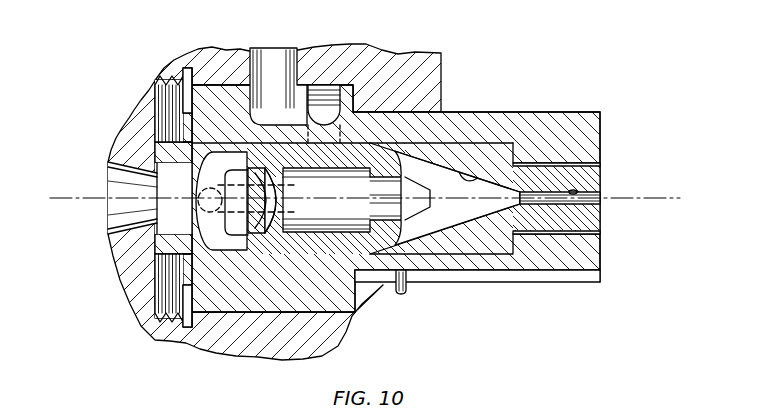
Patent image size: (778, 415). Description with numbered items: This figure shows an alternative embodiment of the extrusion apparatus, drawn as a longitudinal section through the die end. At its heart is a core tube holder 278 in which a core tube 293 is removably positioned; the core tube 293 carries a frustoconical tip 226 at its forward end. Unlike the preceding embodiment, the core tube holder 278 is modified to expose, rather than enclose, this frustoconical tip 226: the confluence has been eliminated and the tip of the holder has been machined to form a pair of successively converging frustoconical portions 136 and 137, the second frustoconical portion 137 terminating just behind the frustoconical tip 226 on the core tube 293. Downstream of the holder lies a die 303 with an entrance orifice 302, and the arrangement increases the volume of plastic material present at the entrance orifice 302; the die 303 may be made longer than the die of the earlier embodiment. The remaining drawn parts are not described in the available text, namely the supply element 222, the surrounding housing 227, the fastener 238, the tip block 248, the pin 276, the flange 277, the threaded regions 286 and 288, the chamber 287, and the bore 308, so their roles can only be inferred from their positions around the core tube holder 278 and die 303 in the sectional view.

The frustoconical portion 136 is at (372, 150).
The frustoconical portion 137 is at (390, 158).
The supply tube 222 is at (92, 199).
The frustoconical tip 226 is at (463, 64).
The housing 227 is at (342, 338).
The bolt 238 is at (253, 68).
The nozzle tip block 248 is at (570, 117).
The locating pin 276 is at (408, 292).
The flange 277 is at (580, 272).
The core tube holder 278 is at (351, 142).
The upper thread 286 is at (248, 135).
The chamber 287 is at (224, 237).
The lower thread 288 is at (242, 223).
The core tube 293 is at (330, 217).
The entrance orifice 302 is at (515, 143).
The die 303 is at (513, 248).
The discharge bore 308 is at (575, 192).